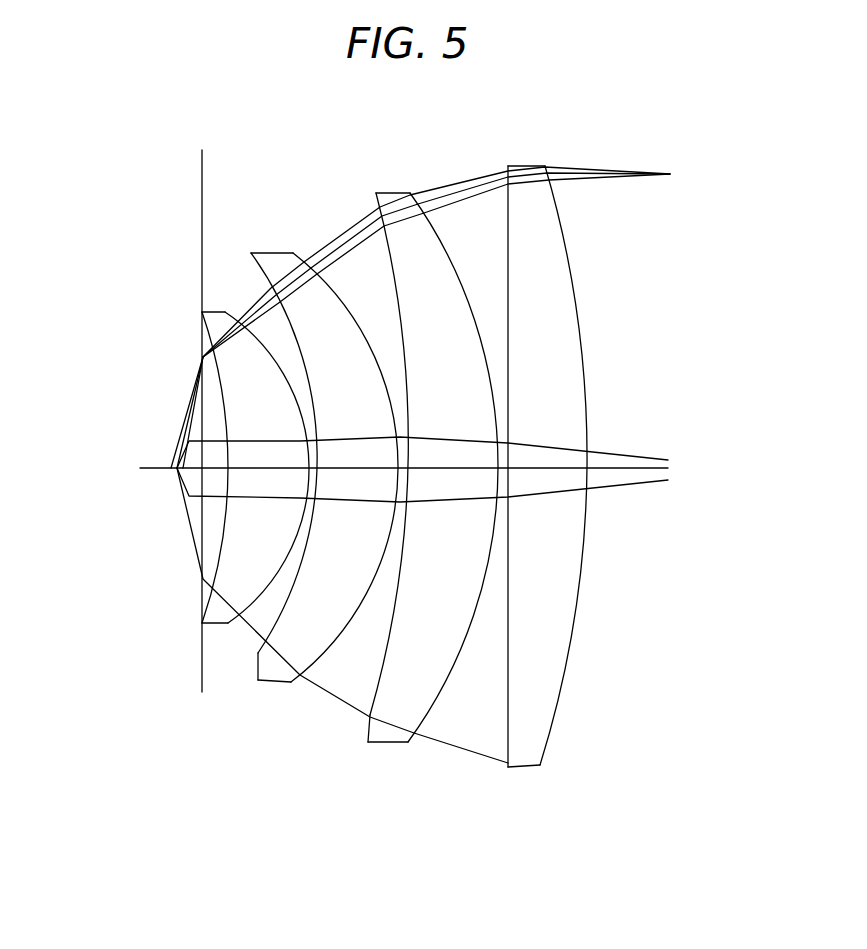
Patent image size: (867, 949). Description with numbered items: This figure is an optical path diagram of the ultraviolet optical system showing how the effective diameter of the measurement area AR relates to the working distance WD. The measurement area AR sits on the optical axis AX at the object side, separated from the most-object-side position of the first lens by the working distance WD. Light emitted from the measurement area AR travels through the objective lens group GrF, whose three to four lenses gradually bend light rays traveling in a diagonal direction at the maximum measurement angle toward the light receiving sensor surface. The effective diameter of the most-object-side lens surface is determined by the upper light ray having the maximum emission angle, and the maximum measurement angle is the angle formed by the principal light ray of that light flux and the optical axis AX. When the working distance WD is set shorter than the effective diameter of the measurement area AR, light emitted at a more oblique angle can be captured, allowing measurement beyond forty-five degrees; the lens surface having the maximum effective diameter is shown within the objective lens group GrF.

The objective lens group GrF is at (391, 538).
The optical axis AX is at (634, 462).
The measurement area AR is at (176, 428).
The working distance WD is at (177, 478).